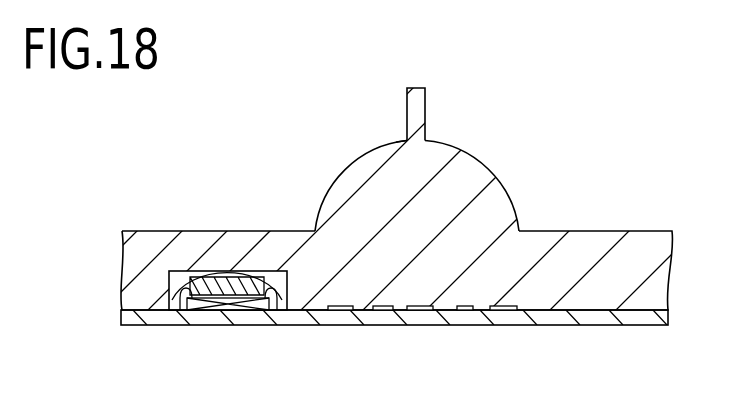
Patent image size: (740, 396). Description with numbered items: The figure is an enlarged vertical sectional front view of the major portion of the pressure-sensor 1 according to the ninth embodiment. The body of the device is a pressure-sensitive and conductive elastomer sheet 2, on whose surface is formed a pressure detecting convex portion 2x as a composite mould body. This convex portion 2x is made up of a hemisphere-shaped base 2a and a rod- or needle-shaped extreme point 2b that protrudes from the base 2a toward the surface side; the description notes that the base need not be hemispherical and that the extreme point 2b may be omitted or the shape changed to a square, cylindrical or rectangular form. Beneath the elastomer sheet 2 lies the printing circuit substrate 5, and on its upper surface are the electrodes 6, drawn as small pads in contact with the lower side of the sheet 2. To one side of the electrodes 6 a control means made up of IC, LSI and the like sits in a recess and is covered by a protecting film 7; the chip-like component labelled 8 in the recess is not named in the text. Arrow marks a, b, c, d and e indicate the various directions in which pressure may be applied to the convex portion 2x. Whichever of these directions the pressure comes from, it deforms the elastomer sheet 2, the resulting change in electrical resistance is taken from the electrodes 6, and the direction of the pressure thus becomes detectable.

The pressure-sensor 1 is at (638, 136).
The pressure-sensitive and conductive elastomer sheet 2 is at (665, 252).
The hemisphere-shaped base 2a is at (343, 172).
The rod- or needle-shaped extreme point 2b is at (407, 118).
The pressure detecting convex portion 2x is at (397, 138).
The printing circuit substrate 5 is at (667, 311).
The electrodes 6 is at (500, 311).
The protecting film 7 is at (175, 300).
The semiconductor chip 8 is at (222, 300).
The arrow mark a is at (413, 85).
The arrow mark b is at (431, 103).
The arrow mark c is at (457, 121).
The arrow mark d is at (492, 169).
The arrow mark e is at (517, 192).